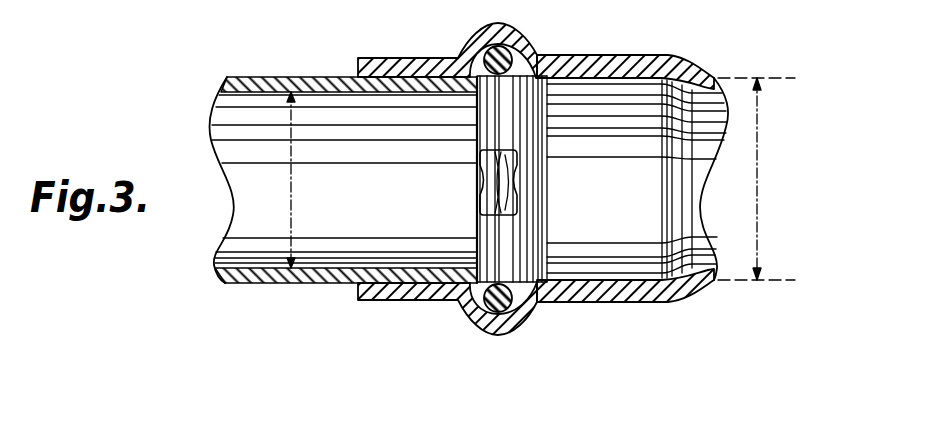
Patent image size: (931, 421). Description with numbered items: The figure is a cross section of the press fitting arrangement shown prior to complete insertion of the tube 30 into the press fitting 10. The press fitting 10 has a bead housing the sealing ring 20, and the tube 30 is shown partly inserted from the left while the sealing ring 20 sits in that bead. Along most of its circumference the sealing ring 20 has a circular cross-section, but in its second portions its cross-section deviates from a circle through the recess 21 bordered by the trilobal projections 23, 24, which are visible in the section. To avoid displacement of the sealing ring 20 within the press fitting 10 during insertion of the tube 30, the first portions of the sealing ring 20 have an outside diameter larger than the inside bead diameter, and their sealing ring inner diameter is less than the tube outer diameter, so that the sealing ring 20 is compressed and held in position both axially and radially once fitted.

The press fitting 10 is at (653, 300).
The sealing ring 20 is at (490, 107).
The recess 21 is at (517, 181).
The trilobal projection 23 is at (513, 158).
The trilobal projection 24 is at (517, 206).
The tube 30 is at (259, 77).